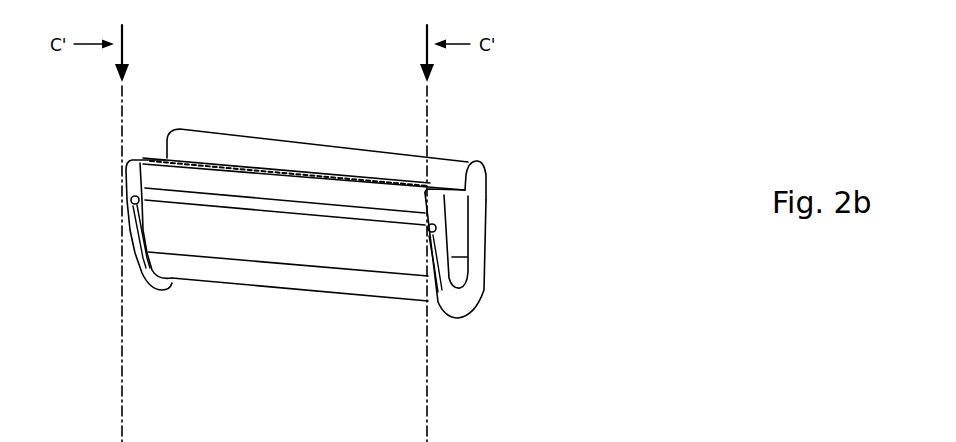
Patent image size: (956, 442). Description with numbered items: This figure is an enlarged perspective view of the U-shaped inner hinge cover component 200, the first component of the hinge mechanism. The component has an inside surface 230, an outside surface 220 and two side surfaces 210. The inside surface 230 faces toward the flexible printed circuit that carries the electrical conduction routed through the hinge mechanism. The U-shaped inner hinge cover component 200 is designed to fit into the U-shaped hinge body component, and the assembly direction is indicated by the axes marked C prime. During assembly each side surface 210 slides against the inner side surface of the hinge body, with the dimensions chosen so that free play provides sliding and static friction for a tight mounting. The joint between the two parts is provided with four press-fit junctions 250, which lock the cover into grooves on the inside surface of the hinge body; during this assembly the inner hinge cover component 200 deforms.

The U-shaped inner hinge cover component 200 is at (309, 213).
The side surface 210 is at (132, 265).
The outside surface 220 is at (328, 138).
The inside surface 230 is at (287, 237).
The press-fit junction 250 is at (127, 203).